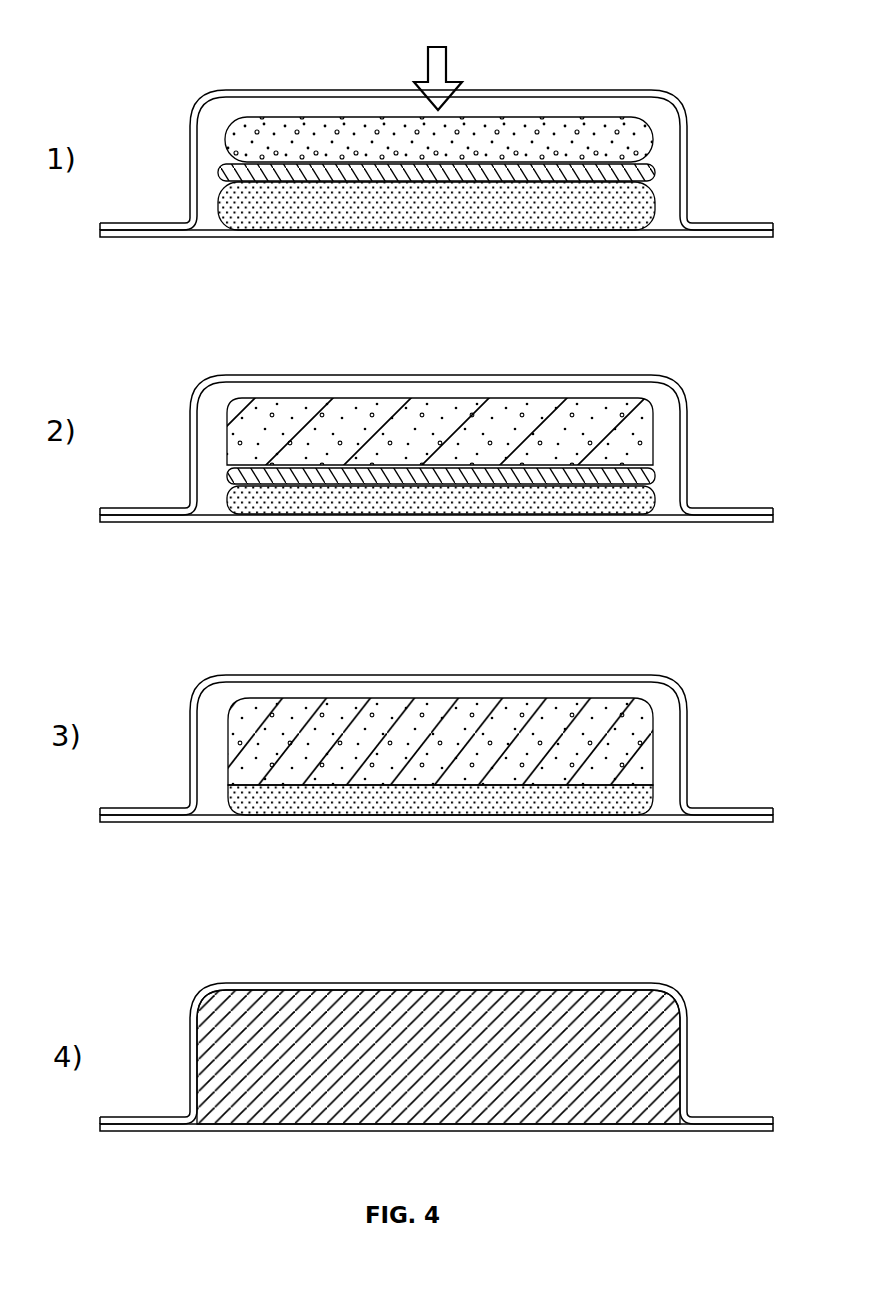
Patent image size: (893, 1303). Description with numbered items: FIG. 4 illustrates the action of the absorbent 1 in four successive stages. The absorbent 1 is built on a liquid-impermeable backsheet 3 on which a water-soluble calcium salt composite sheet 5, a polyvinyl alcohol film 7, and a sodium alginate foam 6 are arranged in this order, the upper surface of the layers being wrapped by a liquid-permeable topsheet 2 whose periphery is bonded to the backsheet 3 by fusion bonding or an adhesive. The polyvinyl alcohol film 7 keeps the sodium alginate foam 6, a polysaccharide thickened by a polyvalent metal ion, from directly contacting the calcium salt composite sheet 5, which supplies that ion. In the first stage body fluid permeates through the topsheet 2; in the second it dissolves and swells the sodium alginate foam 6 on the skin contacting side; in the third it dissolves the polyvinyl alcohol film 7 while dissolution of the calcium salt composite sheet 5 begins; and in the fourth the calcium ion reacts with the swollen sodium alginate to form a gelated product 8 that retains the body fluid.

The absorbent 1 is at (675, 62).
The liquid-permeable topsheet 2 is at (690, 145).
The liquid-impermeable backsheet 3 is at (689, 239).
The water-soluble calcium salt composite sheet 5 is at (217, 215).
The sodium alginate foam 6 is at (230, 116).
The polyvinyl alcohol film 7 is at (215, 174).
The gelated product 8 is at (200, 1052).